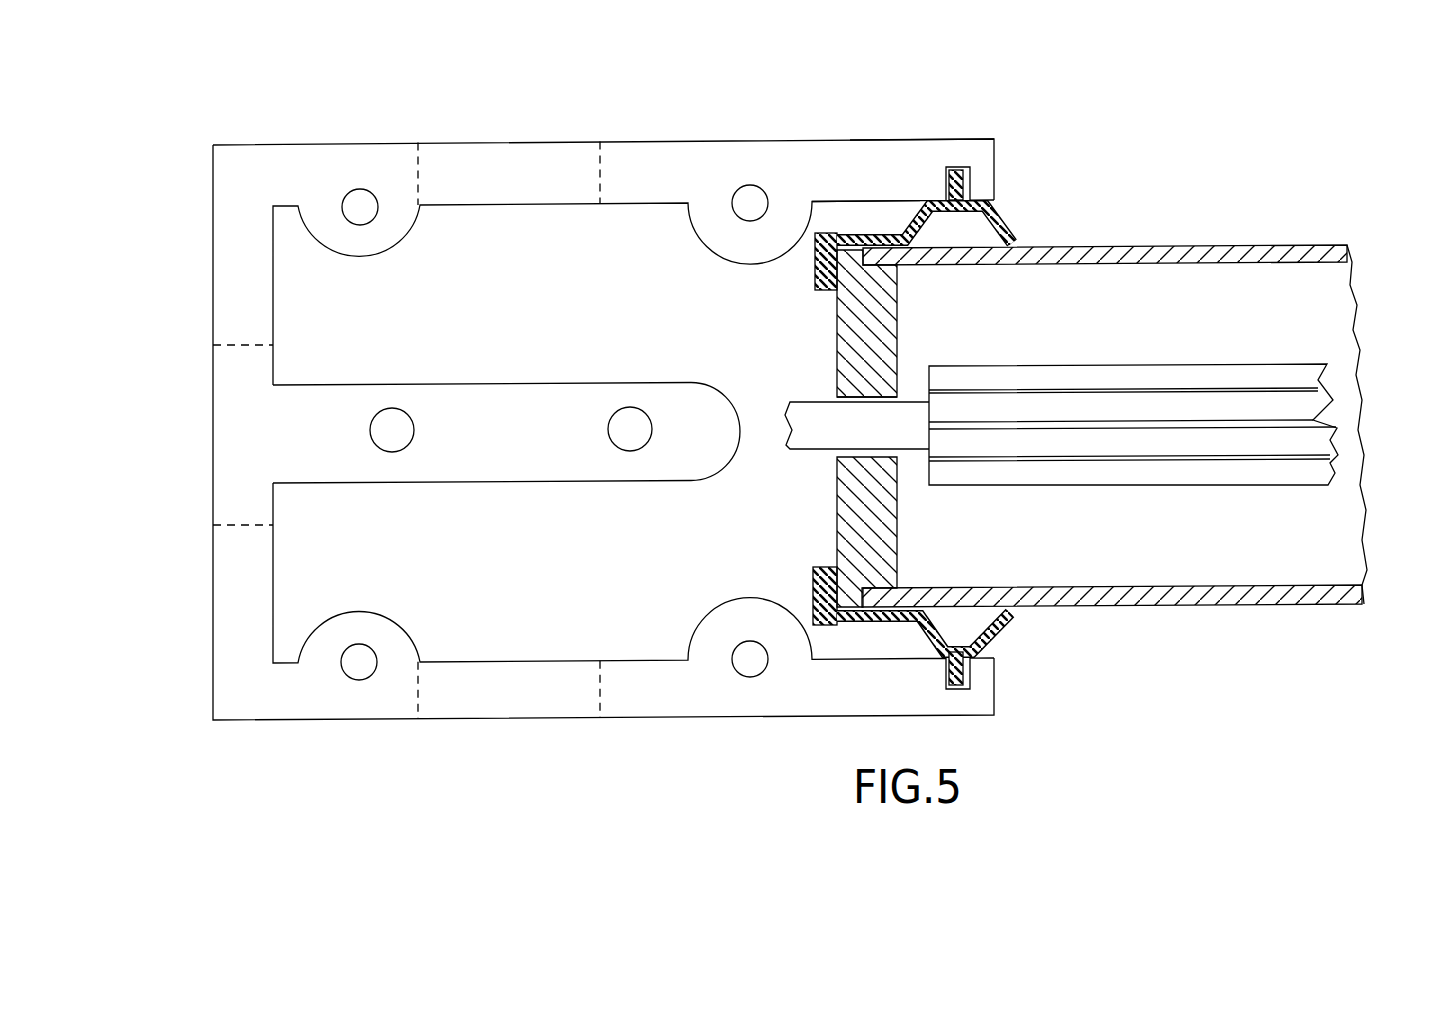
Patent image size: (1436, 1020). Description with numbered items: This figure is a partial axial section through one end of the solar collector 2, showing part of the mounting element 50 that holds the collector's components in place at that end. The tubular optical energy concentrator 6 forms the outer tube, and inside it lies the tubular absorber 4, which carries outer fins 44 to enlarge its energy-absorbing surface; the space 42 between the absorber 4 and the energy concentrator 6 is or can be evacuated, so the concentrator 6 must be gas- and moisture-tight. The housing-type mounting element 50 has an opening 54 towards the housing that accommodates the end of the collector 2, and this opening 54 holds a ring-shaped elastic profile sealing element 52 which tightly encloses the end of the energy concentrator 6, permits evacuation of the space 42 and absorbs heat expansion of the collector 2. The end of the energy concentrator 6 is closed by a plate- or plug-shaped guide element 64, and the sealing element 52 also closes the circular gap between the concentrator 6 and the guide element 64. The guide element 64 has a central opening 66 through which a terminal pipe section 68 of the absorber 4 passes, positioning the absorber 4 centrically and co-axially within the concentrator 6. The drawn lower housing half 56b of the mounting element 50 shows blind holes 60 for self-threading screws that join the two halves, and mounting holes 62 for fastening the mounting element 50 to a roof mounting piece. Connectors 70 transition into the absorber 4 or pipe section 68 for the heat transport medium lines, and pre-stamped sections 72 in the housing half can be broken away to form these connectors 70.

The solar collector 2 is at (1217, 238).
The absorber 4 is at (1328, 402).
The optical energy concentrator 6 is at (1313, 245).
The space 42 is at (1277, 575).
The outer fins 44 is at (1197, 422).
The mounting element 50 is at (820, 136).
The sealing element 52 is at (1008, 217).
The opening 54 is at (886, 205).
The lower housing half 56b is at (891, 150).
The blind holes 60 is at (357, 199).
The mounting holes 62 is at (392, 416).
The guide element 64 is at (884, 528).
The central opening 66 is at (838, 408).
The terminal pipe section 68 is at (808, 440).
The connector 70 is at (507, 141).
The pre-stamped sections 72 is at (533, 188).